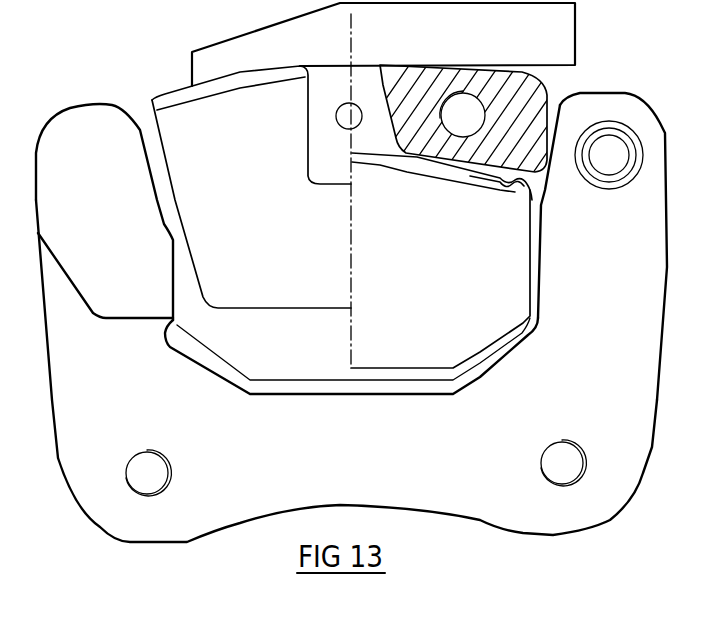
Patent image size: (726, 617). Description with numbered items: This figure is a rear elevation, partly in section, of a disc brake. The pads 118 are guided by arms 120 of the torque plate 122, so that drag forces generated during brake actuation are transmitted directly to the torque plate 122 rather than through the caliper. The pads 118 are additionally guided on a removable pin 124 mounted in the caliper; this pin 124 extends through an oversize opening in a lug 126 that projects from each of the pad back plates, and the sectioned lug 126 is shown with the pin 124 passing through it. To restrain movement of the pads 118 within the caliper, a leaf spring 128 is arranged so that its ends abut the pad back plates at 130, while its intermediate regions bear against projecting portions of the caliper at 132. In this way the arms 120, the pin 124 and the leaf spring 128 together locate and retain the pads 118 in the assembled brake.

The pad 118 is at (447, 325).
The arm 120 is at (104, 239).
The torque plate 122 is at (365, 476).
The removable pin 124 is at (352, 103).
The lug 126 is at (373, 128).
The leaf spring 128 is at (465, 172).
The pad back plate abutment 130 is at (522, 190).
The caliper projecting portion abutment 132 is at (423, 160).